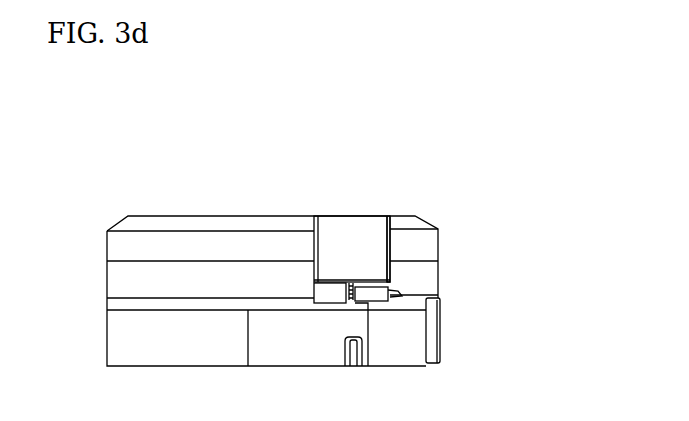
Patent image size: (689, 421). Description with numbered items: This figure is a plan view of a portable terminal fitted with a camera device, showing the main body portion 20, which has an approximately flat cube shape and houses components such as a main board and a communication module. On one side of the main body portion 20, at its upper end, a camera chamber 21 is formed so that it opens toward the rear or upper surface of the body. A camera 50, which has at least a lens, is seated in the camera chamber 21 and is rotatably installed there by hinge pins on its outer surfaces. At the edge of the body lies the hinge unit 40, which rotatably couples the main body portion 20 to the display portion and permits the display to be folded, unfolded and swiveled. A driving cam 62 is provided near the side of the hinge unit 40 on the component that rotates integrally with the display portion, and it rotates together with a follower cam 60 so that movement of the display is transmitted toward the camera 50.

The main body portion 20 is at (430, 268).
The camera chamber 21 is at (382, 246).
The camera 50 is at (327, 227).
The follower cam 60 is at (403, 295).
The hinge unit 40 is at (437, 325).
The driving cam 62 is at (363, 305).